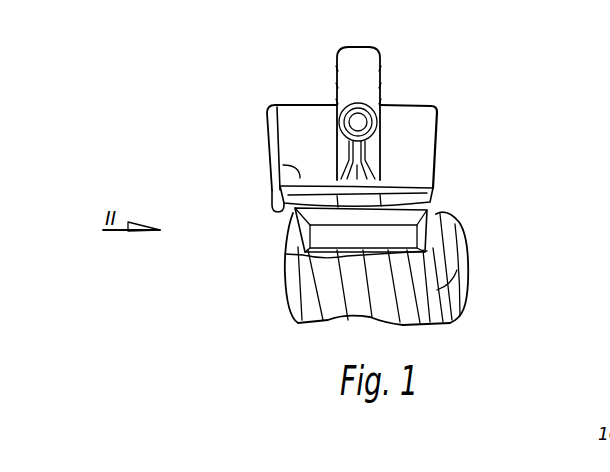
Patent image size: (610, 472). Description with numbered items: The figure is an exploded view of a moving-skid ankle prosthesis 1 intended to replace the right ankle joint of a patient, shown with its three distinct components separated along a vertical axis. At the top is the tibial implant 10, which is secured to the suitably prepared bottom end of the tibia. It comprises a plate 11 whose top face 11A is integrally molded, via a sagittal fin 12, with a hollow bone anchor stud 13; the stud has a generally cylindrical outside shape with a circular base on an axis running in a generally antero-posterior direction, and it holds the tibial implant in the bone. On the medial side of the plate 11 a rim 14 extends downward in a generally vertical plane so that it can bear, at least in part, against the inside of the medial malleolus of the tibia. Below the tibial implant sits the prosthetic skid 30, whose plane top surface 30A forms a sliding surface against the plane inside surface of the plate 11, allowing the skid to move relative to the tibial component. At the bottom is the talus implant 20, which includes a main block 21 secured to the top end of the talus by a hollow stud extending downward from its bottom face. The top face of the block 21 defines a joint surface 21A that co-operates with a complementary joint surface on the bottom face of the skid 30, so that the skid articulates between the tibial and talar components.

The article carrier / assembly 1 is at (488, 97).
The tibial implant 10 is at (194, 125).
The plate 11 is at (278, 175).
The top face 11A is at (303, 137).
The sagittal fin 12 is at (307, 150).
The hollow bone anchor stud 13 is at (352, 55).
The rim 14 is at (280, 209).
The talus implant 20 is at (470, 257).
The main block 21 is at (470, 292).
The joint surface 21A is at (367, 272).
The prosthetic skid 30 is at (438, 200).
The plane top surface 30A is at (403, 200).